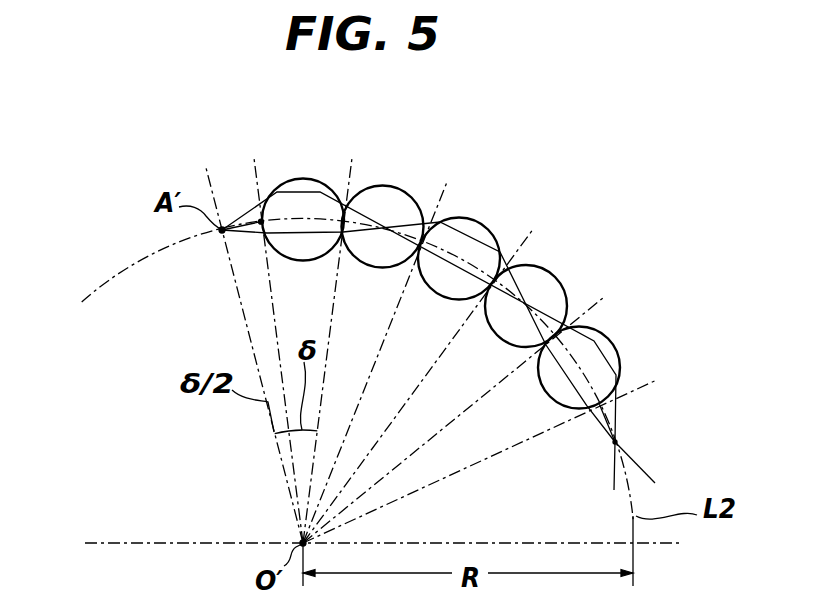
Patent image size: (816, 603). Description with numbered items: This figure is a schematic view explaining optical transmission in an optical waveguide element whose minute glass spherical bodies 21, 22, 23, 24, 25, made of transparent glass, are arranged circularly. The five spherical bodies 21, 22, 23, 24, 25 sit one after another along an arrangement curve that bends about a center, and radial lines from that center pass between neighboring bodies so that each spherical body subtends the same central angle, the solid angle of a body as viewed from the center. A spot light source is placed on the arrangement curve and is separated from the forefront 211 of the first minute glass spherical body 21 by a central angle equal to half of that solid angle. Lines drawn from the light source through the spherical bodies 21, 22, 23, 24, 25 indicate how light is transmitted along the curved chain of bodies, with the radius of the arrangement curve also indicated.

The minute glass spherical body 21 is at (303, 178).
The minute glass spherical body 22 is at (390, 205).
The minute glass spherical body 23 is at (472, 232).
The minute glass spherical body 24 is at (546, 292).
The minute glass spherical body 25 is at (615, 352).
The forefront of the minute glass spherical body 211 is at (260, 221).